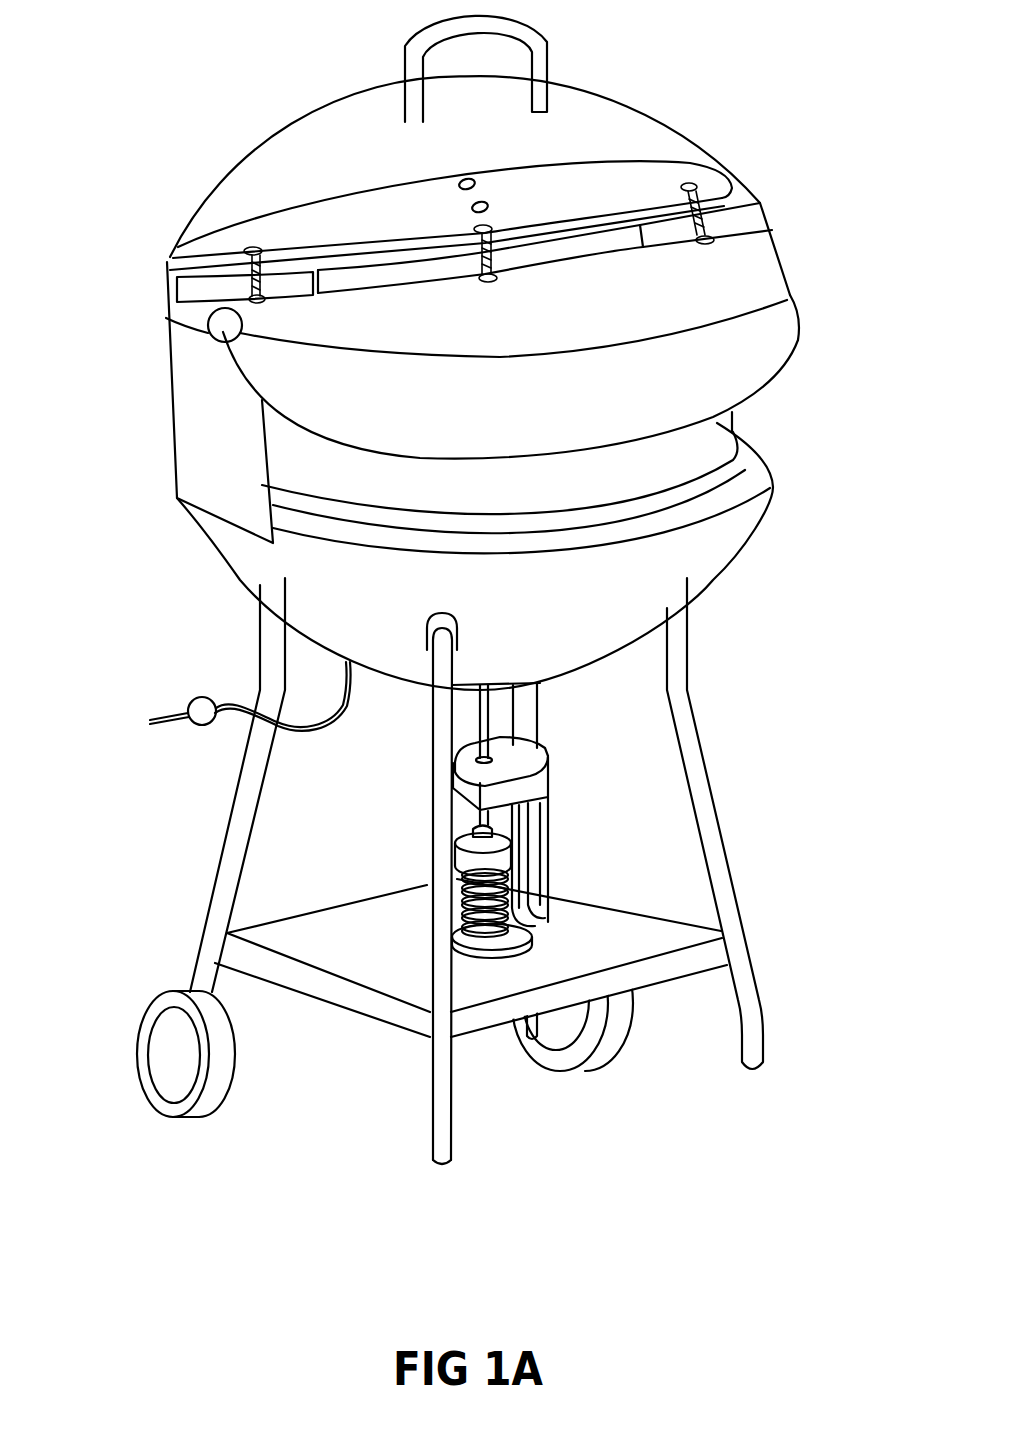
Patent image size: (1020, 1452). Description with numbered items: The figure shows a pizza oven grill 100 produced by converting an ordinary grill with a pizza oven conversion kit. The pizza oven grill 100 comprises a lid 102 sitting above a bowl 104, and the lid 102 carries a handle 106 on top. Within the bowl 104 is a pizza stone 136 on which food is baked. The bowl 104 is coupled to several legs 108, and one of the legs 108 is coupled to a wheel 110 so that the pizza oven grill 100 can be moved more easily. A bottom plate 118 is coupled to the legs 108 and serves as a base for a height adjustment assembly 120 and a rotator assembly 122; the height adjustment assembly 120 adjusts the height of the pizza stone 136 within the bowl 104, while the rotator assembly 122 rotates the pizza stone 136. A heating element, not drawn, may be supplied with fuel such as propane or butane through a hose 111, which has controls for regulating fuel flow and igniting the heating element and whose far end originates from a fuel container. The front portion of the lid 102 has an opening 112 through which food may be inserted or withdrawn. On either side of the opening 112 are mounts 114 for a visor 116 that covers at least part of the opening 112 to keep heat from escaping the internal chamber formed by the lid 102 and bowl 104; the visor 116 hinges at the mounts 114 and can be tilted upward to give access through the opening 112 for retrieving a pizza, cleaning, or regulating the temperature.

The pizza oven grill 100 is at (118, 124).
The lid 102 is at (762, 259).
The bowl 104 is at (718, 543).
The handle 106 is at (542, 53).
The legs 108 is at (677, 645).
The wheel 110 is at (170, 1054).
The hose 111 is at (202, 715).
The opening 112 is at (832, 511).
The mounts 114 is at (222, 327).
The visor 116 is at (782, 350).
The bottom plate 118 is at (377, 1000).
The height adjustment assembly 120 is at (453, 837).
The rotator assembly 122 is at (533, 752).
The pizza stone 136 is at (718, 446).